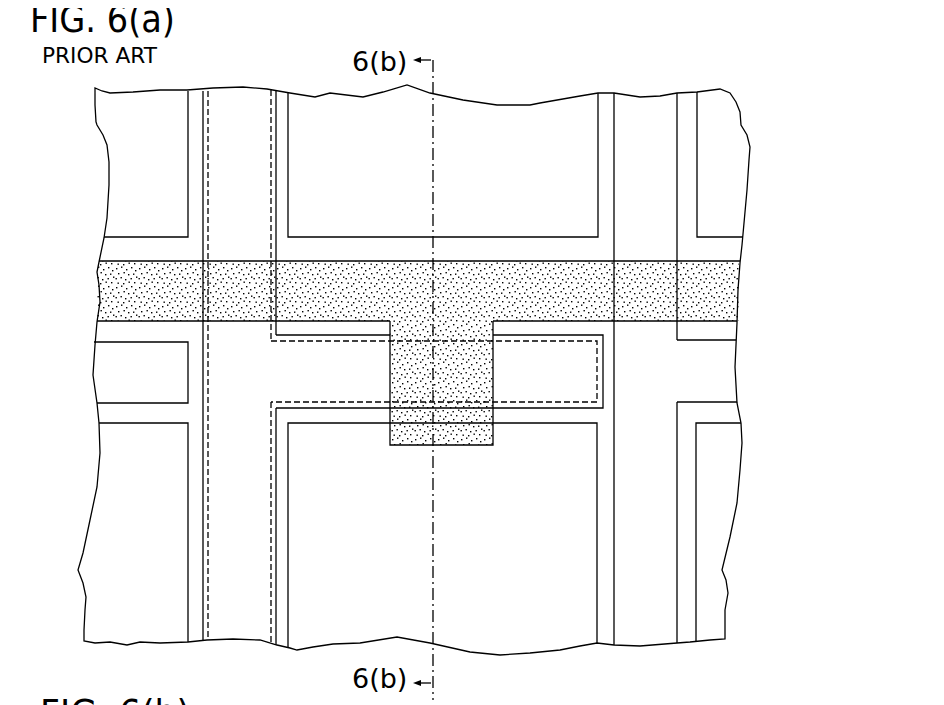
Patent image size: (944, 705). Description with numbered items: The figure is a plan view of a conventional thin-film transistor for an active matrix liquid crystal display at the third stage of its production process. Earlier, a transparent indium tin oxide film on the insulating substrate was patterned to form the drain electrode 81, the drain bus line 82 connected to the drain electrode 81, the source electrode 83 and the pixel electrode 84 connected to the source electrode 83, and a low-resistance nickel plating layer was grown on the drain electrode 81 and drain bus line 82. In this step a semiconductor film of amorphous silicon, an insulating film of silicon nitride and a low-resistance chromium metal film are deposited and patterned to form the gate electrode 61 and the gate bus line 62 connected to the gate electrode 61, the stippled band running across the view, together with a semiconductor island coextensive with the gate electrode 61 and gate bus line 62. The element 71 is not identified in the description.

The gate bus line 62 is at (719, 288).
The gate electrode 61 is at (495, 371).
The drain bus line 82 is at (243, 106).
The drain electrode 81 is at (555, 361).
The drain electrode 71 is at (552, 417).
The source electrode 83 is at (542, 457).
The pixel electrode 84 is at (570, 622).